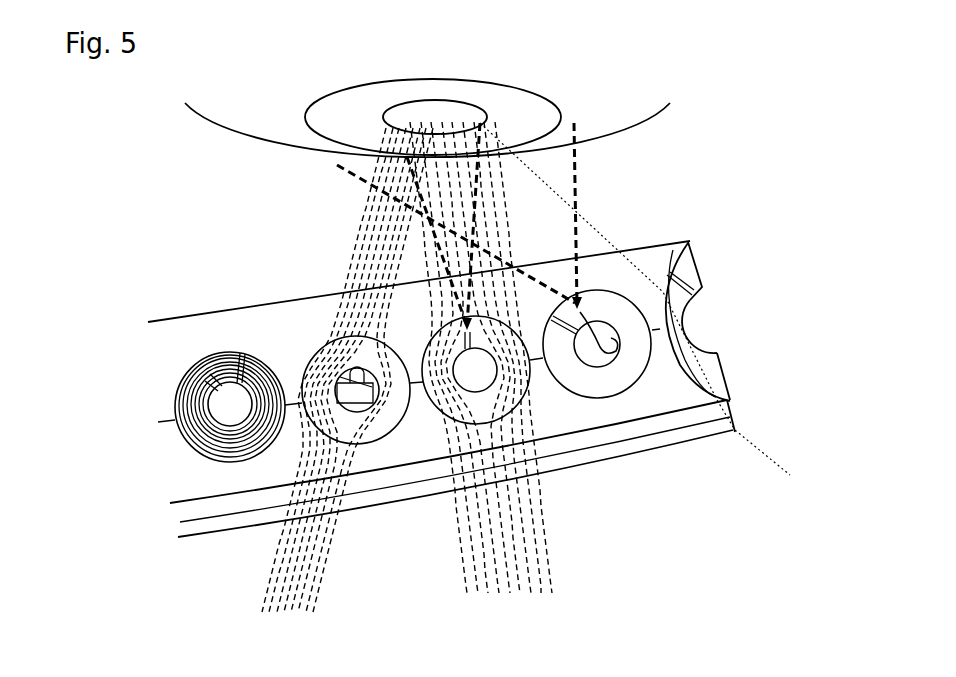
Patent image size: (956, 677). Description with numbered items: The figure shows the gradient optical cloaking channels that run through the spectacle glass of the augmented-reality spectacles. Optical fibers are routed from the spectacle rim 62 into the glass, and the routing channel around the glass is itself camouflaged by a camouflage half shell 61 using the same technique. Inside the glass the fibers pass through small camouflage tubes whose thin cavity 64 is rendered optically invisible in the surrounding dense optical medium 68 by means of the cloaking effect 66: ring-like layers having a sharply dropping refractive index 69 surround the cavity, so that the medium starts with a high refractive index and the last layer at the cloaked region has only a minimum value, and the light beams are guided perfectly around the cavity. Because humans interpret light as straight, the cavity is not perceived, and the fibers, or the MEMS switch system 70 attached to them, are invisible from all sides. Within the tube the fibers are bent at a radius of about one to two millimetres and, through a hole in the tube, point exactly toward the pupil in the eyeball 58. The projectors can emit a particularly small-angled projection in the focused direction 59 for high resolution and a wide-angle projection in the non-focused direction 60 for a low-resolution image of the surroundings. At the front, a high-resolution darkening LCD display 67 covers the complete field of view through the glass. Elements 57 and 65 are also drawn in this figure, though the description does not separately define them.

The disc 57 is at (310, 97).
The pupil in the eyeball 58 is at (423, 108).
The small-angled projection direction 59 is at (475, 177).
The wide-angle projection direction 60 is at (575, 165).
The camouflage half shell 61 is at (685, 260).
The spectacle rim 62 is at (702, 320).
The cavity 64 is at (612, 352).
The ring element 65 is at (600, 380).
The cloaking effect 66 is at (477, 540).
The darkening LCD display 67 is at (190, 525).
The dense optical medium 68 is at (182, 482).
The refractive index layers 69 is at (230, 360).
The MEMS switch system 70 is at (350, 388).